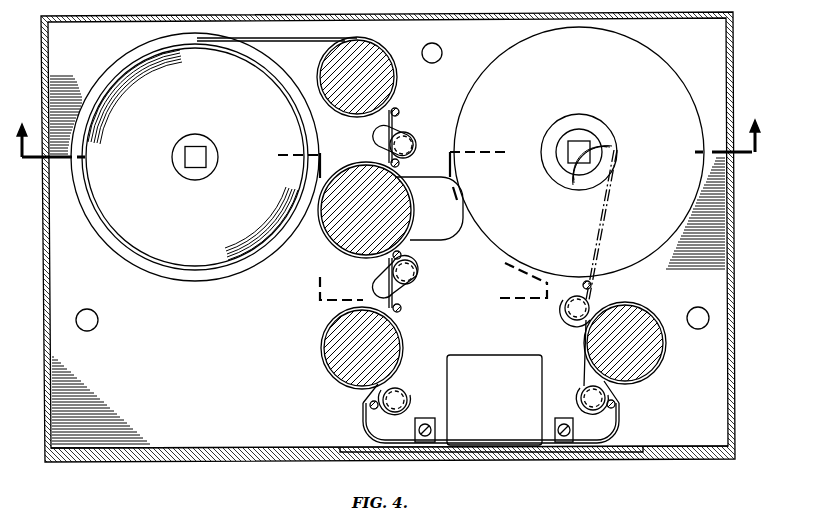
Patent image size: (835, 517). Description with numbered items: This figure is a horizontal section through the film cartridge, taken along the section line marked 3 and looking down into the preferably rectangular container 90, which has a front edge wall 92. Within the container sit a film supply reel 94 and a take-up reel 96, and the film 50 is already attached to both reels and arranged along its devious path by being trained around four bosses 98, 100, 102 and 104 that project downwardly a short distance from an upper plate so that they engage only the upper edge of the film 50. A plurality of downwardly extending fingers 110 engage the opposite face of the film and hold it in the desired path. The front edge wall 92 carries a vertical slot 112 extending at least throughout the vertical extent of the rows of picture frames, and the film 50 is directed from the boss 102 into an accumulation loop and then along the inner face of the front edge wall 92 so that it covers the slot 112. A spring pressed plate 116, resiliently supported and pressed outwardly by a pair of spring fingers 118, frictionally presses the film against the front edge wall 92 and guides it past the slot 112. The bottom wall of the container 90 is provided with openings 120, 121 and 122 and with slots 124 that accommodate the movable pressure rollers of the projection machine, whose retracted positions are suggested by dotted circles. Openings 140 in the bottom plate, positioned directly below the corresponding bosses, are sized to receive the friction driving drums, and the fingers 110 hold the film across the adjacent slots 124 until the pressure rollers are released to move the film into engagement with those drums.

The section line 3- 3 is at (389, 167).
The film 50 is at (318, 42).
The container 90 is at (153, 441).
The front edge wall 92 is at (292, 456).
The film supply reel 94 is at (193, 281).
The take-up reel 96 is at (664, 80).
The boss 98 is at (363, 106).
The boss 100 is at (333, 261).
The boss 102 is at (330, 358).
The boss 104 is at (642, 358).
The fingers 110 is at (398, 110).
The vertical slot 112 is at (500, 453).
The spring pressed plate 116 is at (470, 445).
The spring fingers 118 is at (425, 418).
The opening 120 is at (509, 358).
The opening 121 is at (447, 232).
The opening 122 is at (443, 56).
The slots 124 is at (409, 131).
The openings 140 is at (326, 97).